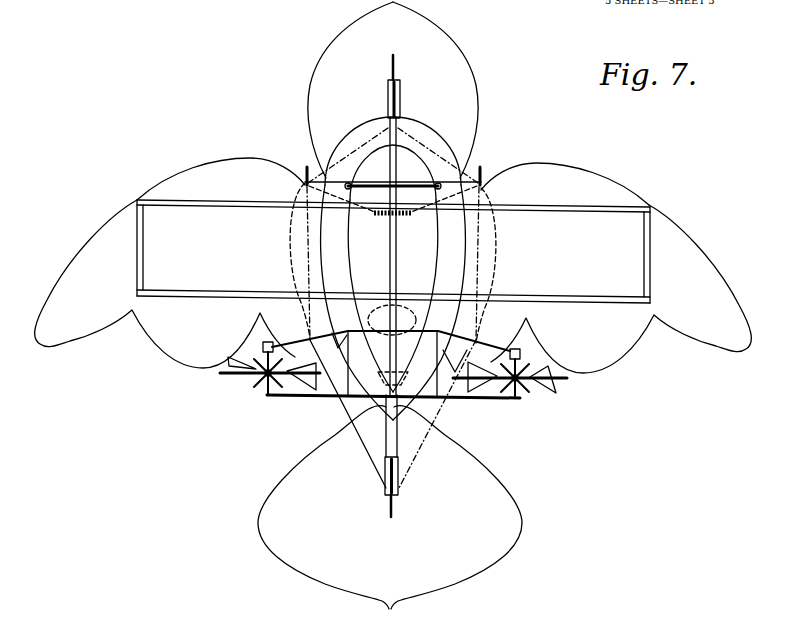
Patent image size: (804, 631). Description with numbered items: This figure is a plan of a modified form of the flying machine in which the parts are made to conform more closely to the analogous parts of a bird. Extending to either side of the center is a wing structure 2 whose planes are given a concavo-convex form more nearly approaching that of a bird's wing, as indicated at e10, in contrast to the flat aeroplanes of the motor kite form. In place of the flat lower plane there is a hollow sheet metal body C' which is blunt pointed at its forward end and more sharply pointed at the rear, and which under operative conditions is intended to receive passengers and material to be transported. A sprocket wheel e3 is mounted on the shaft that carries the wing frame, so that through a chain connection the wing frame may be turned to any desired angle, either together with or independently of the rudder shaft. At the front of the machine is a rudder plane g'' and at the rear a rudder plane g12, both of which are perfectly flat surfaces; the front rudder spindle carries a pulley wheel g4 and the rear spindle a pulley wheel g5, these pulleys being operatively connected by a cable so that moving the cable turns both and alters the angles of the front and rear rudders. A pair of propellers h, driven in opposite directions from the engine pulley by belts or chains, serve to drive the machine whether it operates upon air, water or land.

The wing 2 is at (98, 244).
The concavo-convex wing plane e10 is at (393, 251).
The sprocket wheel e3 is at (393, 226).
The hollow sheet metal body C' is at (393, 302).
The front rudder plane g'' is at (397, 90).
The pulley wheel g4 is at (397, 67).
The pulley wheel g5 is at (398, 507).
The rear rudder plane g12 is at (520, 497).
The propellers h is at (396, 377).